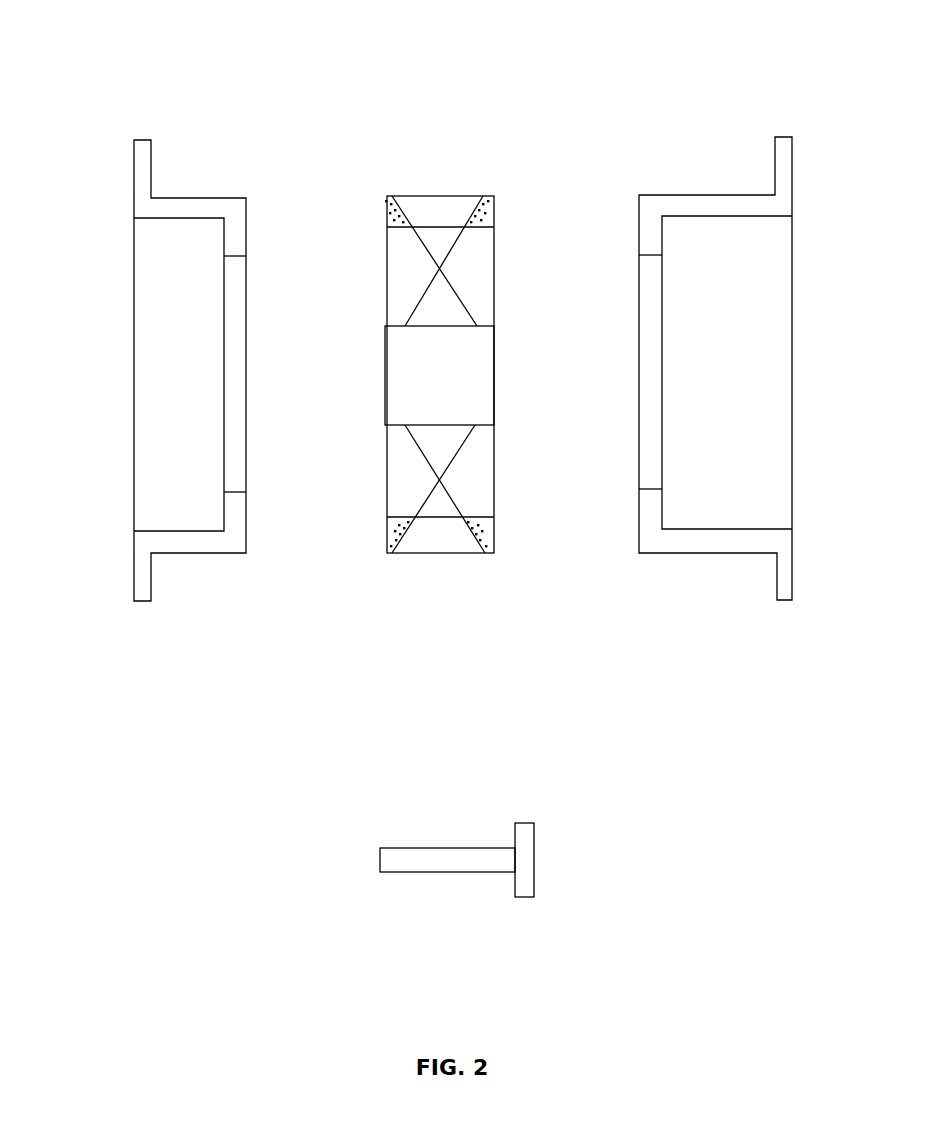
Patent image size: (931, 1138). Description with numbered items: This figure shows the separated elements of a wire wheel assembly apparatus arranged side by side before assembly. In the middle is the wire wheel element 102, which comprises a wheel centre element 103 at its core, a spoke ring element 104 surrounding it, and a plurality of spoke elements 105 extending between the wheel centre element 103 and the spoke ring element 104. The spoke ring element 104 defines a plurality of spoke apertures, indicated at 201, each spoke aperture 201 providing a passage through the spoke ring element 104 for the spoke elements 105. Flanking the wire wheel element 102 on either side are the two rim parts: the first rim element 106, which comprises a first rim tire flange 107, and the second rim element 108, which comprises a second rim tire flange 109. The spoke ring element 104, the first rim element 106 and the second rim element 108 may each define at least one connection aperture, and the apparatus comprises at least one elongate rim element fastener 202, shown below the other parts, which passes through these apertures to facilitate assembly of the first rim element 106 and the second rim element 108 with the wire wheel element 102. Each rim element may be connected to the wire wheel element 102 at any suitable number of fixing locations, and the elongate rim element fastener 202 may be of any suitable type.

The spoke aperture 201 is at (405, 163).
The spoke ring element 104 is at (498, 172).
The spoke elements 105 is at (465, 277).
The wheel centre element 103 is at (440, 315).
The first rim element 106 is at (235, 593).
The first rim tire flange 107 is at (147, 595).
The second rim element 108 is at (702, 588).
The second rim tire flange 109 is at (785, 593).
The wire wheel element 102 is at (448, 652).
The elongate rim element fastener 202 is at (523, 885).